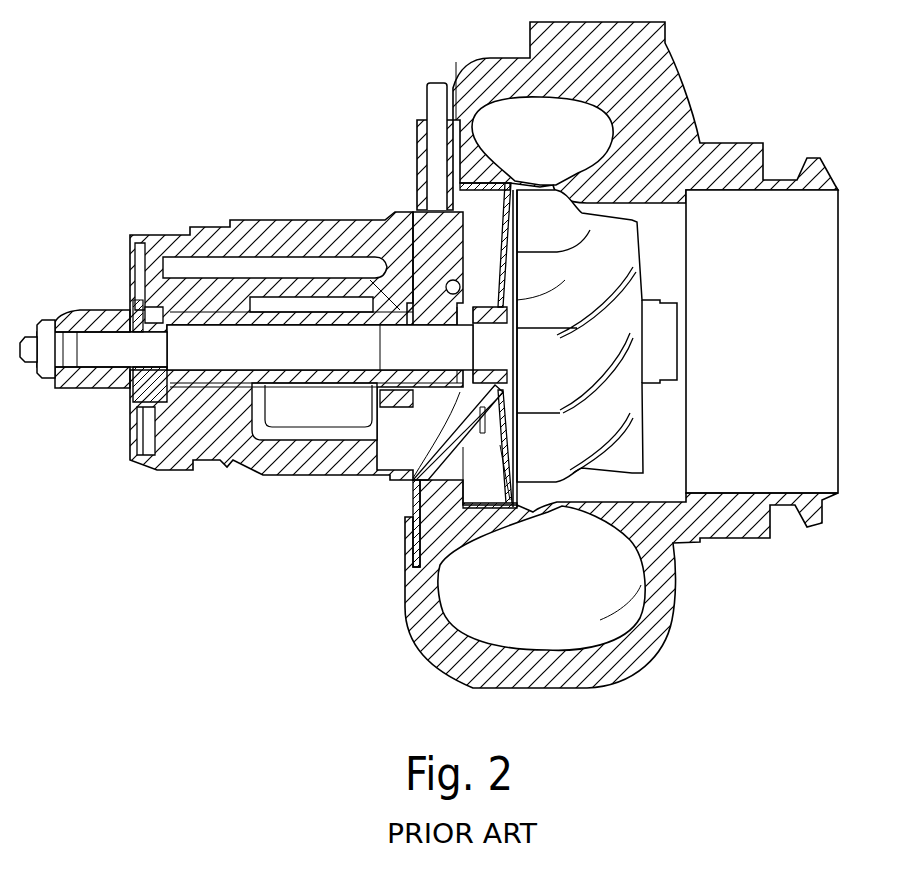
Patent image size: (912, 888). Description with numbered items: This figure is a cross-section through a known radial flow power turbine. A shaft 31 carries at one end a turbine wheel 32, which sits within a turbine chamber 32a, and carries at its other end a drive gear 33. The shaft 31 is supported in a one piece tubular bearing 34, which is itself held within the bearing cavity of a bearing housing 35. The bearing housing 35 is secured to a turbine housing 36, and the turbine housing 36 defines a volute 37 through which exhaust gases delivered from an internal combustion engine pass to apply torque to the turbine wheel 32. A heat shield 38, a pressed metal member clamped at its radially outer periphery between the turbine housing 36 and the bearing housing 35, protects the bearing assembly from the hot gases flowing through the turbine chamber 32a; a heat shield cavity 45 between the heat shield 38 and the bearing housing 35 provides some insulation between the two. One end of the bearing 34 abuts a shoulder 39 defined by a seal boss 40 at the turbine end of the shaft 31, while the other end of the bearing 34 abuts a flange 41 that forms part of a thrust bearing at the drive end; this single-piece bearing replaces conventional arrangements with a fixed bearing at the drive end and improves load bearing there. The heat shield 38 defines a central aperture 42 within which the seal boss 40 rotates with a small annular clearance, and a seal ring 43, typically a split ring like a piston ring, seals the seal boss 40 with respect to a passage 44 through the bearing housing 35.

The shaft 31 is at (308, 338).
The turbine wheel 32 is at (455, 200).
The turbine chamber 32a is at (628, 216).
The drive gear 33 is at (113, 318).
The one piece tubular bearing 34 is at (225, 316).
The bearing housing 35 is at (222, 417).
The turbine housing 36 is at (430, 643).
The volute 37 is at (593, 625).
The heat shield 38 is at (413, 482).
The shoulder 39 is at (440, 303).
The seal boss 40 is at (497, 330).
The flange 41 is at (153, 387).
The central aperture 42 is at (507, 393).
The seal ring 43 is at (460, 397).
The passage 44 is at (480, 382).
The heat shield cavity 45 is at (486, 488).